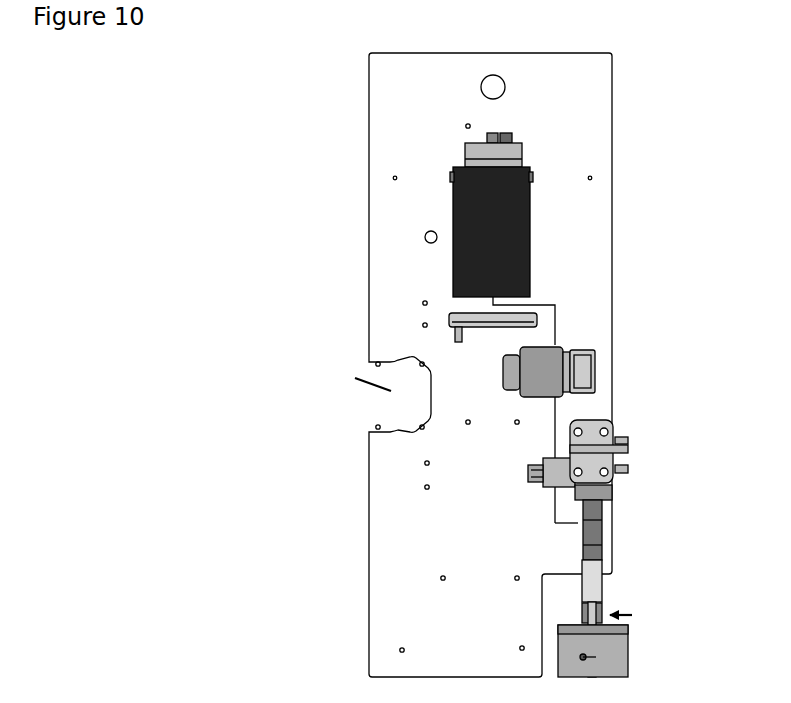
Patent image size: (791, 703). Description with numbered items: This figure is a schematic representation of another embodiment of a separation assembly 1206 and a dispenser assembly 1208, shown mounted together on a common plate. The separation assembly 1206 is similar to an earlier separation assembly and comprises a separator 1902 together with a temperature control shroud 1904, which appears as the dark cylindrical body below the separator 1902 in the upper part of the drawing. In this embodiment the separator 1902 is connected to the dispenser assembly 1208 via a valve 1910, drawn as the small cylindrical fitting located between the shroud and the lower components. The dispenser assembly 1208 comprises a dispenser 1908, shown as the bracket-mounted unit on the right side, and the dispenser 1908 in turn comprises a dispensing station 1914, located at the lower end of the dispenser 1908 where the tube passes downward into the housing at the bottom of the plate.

The separation assembly 1206 is at (358, 216).
The dispenser assembly 1208 is at (357, 518).
The separator 1902 is at (496, 152).
The temperature control shroud 1904 is at (522, 199).
The valve 1910 is at (550, 372).
The dispenser 1908 is at (645, 483).
The dispensing station 1914 is at (603, 594).